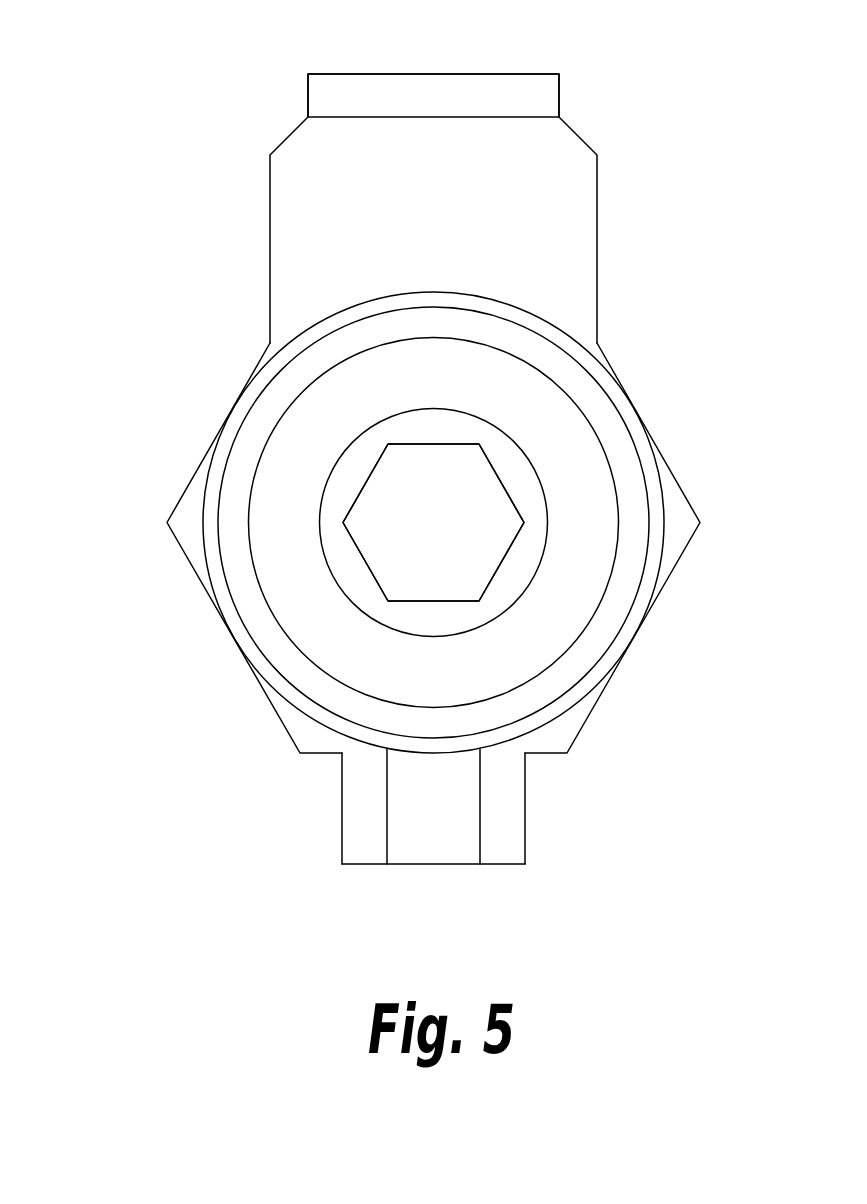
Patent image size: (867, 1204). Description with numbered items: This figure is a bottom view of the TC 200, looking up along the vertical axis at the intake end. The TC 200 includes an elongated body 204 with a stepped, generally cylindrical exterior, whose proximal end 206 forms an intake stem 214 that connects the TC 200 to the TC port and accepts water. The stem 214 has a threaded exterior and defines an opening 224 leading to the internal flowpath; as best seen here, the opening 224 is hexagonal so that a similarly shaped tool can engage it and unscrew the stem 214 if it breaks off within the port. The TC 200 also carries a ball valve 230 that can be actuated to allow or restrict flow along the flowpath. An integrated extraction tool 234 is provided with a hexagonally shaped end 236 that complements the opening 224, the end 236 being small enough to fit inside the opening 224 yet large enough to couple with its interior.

The TC 200 is at (198, 202).
The ball valve 230 is at (458, 97).
The elongated body 204 is at (288, 460).
The proximal end 206 is at (343, 603).
The opening 224 is at (455, 513).
The intake stem 214 is at (528, 550).
The extraction tool 234 is at (493, 803).
The hexagonally shaped end 236 is at (443, 865).